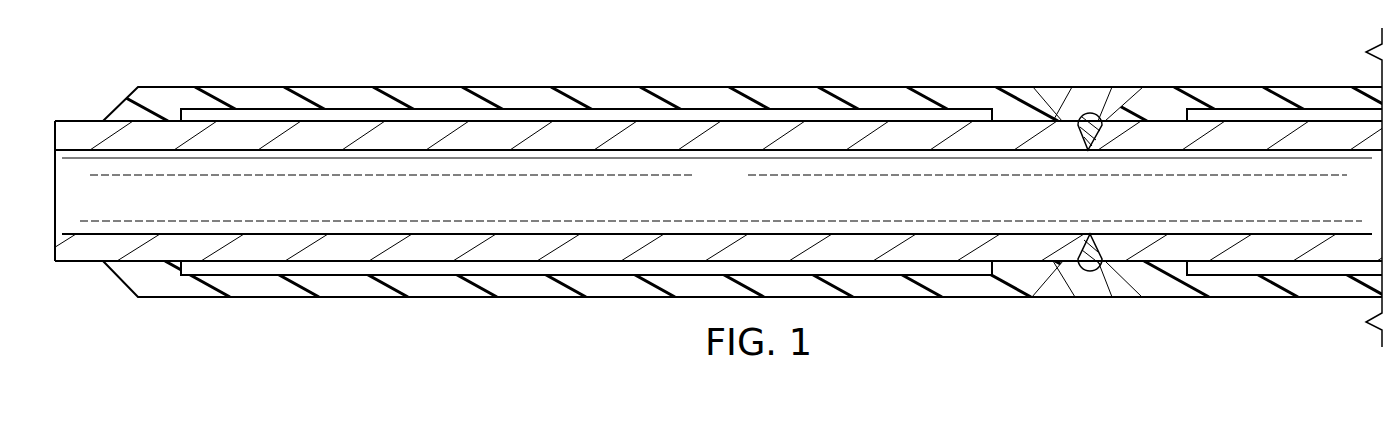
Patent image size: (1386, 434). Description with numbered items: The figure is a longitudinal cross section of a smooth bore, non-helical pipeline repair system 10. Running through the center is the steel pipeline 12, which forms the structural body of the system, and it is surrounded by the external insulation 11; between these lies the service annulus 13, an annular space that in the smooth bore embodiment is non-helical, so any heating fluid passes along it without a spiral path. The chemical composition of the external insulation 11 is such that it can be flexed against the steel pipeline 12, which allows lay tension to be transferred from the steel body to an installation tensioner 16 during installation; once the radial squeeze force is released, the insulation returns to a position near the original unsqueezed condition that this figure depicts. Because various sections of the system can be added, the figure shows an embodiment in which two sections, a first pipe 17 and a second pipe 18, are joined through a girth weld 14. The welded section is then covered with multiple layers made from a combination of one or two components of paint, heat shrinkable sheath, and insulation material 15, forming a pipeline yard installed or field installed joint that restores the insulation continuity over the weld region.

The pipeline repair system 10 is at (270, 56).
The external insulation 11 is at (435, 97).
The steel pipeline 12 is at (88, 268).
The service annulus 13 is at (433, 270).
The girth weld 14 is at (1090, 268).
The insulation material 15 is at (1092, 97).
The installation tensioner 16 is at (736, 205).
The first pipe 17 is at (87, 130).
The second pipe 18 is at (255, 255).